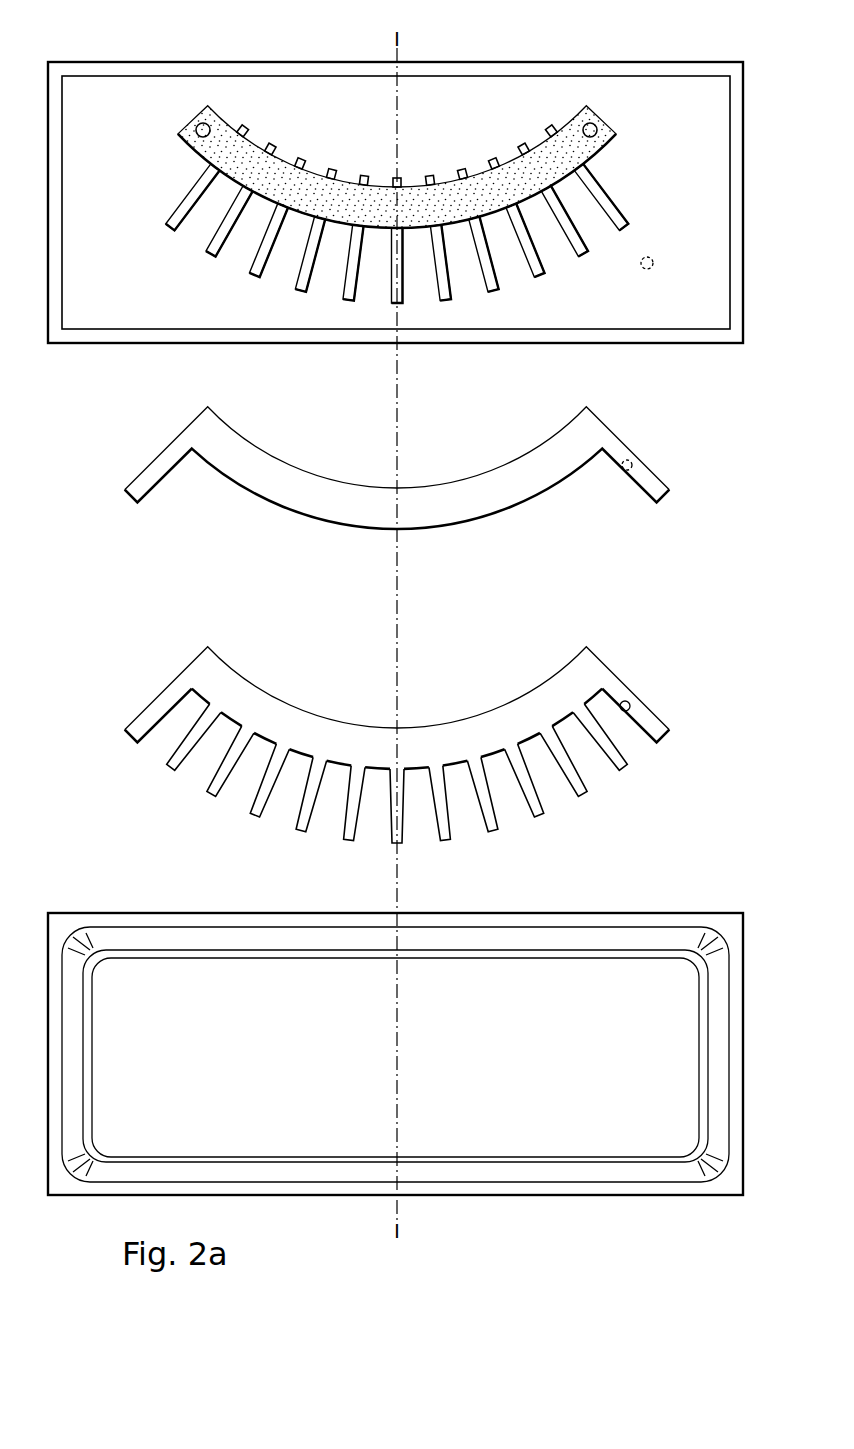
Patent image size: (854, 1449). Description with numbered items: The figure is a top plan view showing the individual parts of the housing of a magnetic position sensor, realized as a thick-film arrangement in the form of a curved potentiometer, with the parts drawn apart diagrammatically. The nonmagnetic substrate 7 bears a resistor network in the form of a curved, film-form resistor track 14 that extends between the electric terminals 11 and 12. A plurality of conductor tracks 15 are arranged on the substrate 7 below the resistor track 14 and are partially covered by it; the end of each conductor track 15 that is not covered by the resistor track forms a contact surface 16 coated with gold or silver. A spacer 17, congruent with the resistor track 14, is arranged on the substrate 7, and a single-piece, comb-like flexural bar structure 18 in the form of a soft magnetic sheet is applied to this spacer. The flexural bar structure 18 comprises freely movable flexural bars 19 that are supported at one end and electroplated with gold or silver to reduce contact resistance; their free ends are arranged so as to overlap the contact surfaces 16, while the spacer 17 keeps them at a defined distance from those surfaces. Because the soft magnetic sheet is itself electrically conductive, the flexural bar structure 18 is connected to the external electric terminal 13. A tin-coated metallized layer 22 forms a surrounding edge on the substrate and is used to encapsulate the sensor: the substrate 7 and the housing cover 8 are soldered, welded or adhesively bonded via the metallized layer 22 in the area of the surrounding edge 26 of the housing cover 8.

The nonmagnetic substrate 7 is at (621, 95).
The housing cover 8 is at (745, 1122).
The electric terminal 11 is at (600, 130).
The electric terminal 12 is at (197, 126).
The external electric terminal 13 is at (630, 703).
The resistor track 14 is at (309, 186).
The conductor tracks 15 is at (362, 176).
The contact surface 16 is at (604, 205).
The spacer 17 is at (590, 433).
The flexural bar structure 18 is at (585, 673).
The flexural bars 19 is at (617, 758).
The metallized layer 22 is at (695, 73).
The surrounding edge 26 is at (735, 972).